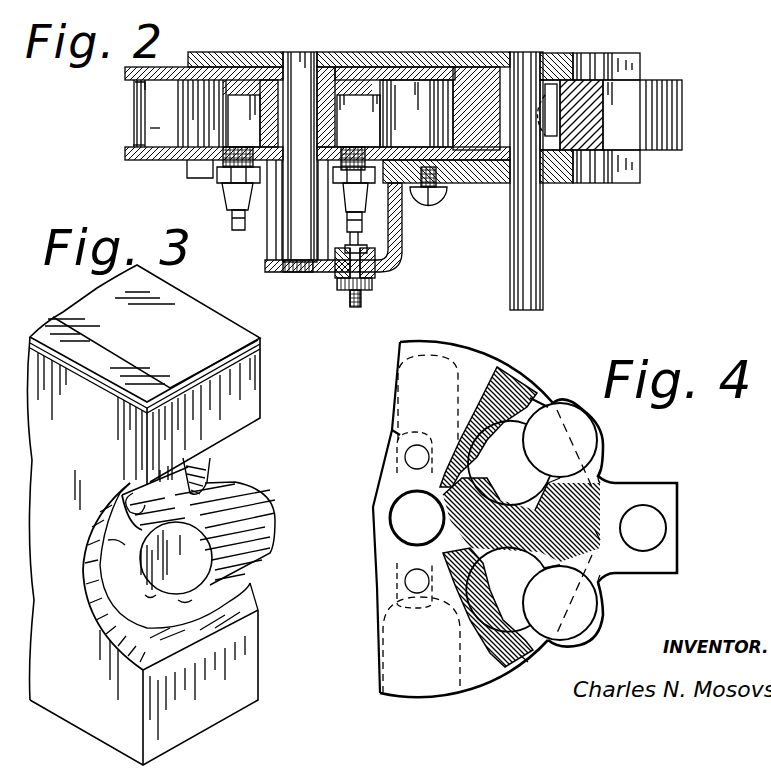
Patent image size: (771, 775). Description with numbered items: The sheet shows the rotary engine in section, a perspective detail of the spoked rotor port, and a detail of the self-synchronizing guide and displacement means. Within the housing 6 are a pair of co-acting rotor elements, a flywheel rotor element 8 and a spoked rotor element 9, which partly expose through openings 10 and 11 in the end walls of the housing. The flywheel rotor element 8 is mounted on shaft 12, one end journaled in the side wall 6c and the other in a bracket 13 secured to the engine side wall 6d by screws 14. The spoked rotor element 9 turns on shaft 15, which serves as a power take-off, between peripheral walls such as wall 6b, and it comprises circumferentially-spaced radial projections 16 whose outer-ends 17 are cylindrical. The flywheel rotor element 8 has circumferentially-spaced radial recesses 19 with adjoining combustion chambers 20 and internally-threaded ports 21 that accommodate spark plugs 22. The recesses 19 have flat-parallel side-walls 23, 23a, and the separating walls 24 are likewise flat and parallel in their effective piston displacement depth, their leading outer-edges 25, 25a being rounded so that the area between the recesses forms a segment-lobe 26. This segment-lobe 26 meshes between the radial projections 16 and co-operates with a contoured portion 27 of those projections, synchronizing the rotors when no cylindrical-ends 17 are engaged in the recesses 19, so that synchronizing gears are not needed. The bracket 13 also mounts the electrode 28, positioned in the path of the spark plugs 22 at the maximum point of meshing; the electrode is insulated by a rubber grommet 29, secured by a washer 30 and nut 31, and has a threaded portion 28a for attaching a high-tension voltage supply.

In FIG. 3, the housing 6 is at (262, 398).
In FIG. 3, the peripheral wall 6b is at (151, 605).
In FIG. 3, the side wall 6c is at (193, 622).
In FIG. 3, the engine side wall 6d is at (172, 458).
In FIG. 2, the flywheel rotor element 8 is at (176, 66).
In FIG. 4, the flywheel rotor element 8 is at (400, 700).
In FIG. 3, the spoked rotor element 9 is at (245, 488).
In FIG. 4, the spoked rotor element 9 is at (651, 483).
In FIG. 2, the opening 10 is at (640, 150).
In FIG. 3, the opening 10 is at (209, 470).
In FIG. 2, the opening 11 is at (185, 162).
In FIG. 2, the shaft 12 is at (296, 53).
In FIG. 2, the bracket 13 is at (400, 248).
In FIG. 2, the screws 14 is at (438, 205).
In FIG. 2, the shaft 15 is at (543, 218).
In FIG. 2, the radial projections 16 is at (487, 85).
In FIG. 3, the radial projections 16 is at (170, 510).
In FIG. 2, the cylindrical-ends 17 is at (412, 106).
In FIG. 3, the cylindrical-ends 17 is at (194, 579).
In FIG. 4, the cylindrical-ends 17 is at (564, 453).
In FIG. 2, the radial recesses 19 is at (155, 133).
In FIG. 4, the radial recesses 19 is at (420, 365).
In FIG. 2, the combustion chambers 20 is at (304, 121).
In FIG. 4, the combustion chambers 20 is at (435, 524).
In FIG. 4, the internally-threaded ports 21 is at (412, 465).
In FIG. 2, the spark plugs 22 is at (233, 200).
In FIG. 2, the side-wall 23 is at (145, 85).
In FIG. 4, the side-wall 23 is at (515, 452).
In FIG. 2, the side-wall 23a is at (135, 143).
In FIG. 2, the wall 24 is at (164, 119).
In FIG. 4, the leading outer-edge 25 is at (545, 398).
In FIG. 4, the leading outer-edge 25a is at (540, 487).
In FIG. 4, the segment-lobe 26 is at (598, 535).
In FIG. 3, the contoured portion 27 is at (118, 533).
In FIG. 4, the contoured portion 27 is at (595, 480).
In FIG. 2, the electrode 28 is at (359, 252).
In FIG. 2, the threaded portion 28a is at (352, 302).
In FIG. 2, the rubber grommet 29 is at (338, 277).
In FIG. 2, the washer 30 is at (377, 286).
In FIG. 2, the nut 31 is at (363, 295).